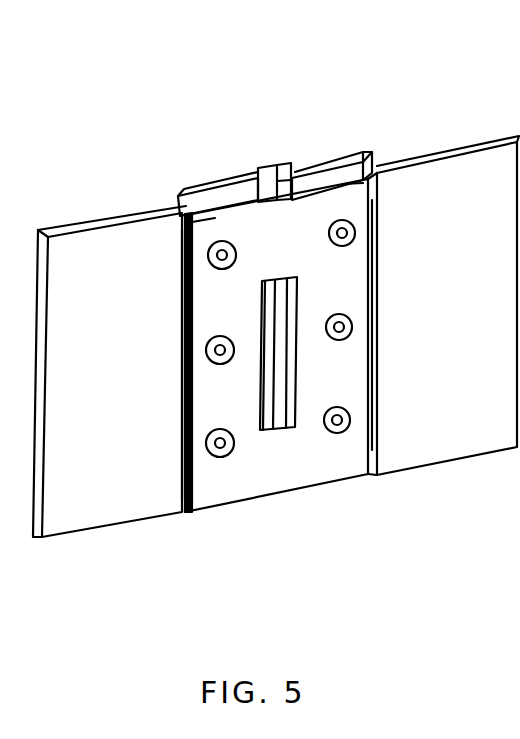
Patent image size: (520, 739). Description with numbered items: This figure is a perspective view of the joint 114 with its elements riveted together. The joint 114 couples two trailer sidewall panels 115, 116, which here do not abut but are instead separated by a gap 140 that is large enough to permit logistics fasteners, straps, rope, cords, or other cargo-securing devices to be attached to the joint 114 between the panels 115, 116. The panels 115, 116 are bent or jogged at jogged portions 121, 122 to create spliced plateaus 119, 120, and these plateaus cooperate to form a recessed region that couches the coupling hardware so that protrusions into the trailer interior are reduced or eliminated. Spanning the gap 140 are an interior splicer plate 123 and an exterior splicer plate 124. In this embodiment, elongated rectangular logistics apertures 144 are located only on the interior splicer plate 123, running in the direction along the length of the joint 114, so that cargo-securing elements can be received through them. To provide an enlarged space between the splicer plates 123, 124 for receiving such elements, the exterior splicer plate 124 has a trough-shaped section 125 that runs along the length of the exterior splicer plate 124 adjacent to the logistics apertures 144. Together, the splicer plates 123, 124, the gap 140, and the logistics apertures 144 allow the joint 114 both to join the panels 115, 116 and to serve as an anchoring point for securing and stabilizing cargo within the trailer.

The joint 114 is at (210, 112).
The wall panel 115 is at (443, 447).
The wall panel 116 is at (93, 520).
The spliced plateau 119 is at (203, 212).
The spliced plateau 120 is at (360, 185).
The jogged portion 121 is at (378, 291).
The jogged portion 122 is at (186, 346).
The interior splicer plate 123 is at (228, 493).
The exterior splicer plate 124 is at (216, 177).
The trough-shaped section 125 is at (260, 164).
The gap 140 is at (283, 166).
The logistics aperture 144 is at (293, 433).